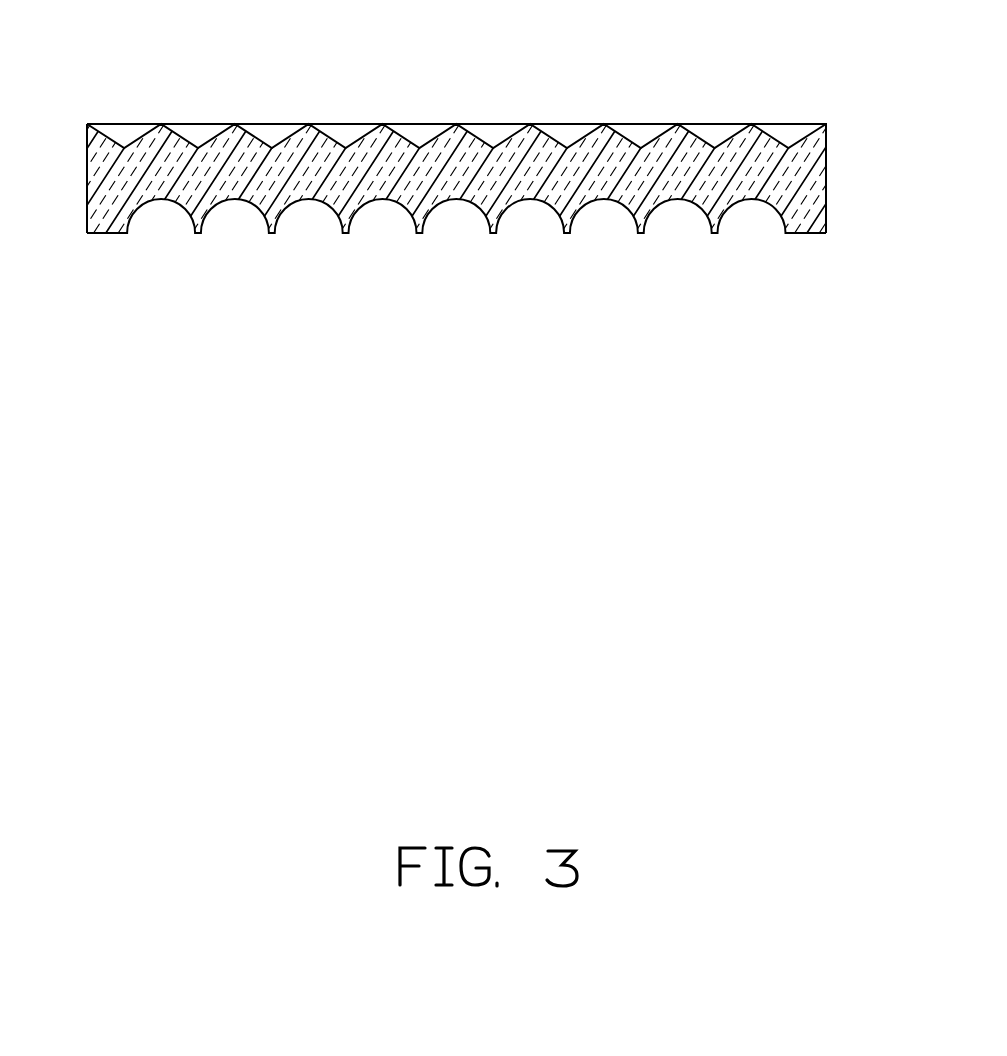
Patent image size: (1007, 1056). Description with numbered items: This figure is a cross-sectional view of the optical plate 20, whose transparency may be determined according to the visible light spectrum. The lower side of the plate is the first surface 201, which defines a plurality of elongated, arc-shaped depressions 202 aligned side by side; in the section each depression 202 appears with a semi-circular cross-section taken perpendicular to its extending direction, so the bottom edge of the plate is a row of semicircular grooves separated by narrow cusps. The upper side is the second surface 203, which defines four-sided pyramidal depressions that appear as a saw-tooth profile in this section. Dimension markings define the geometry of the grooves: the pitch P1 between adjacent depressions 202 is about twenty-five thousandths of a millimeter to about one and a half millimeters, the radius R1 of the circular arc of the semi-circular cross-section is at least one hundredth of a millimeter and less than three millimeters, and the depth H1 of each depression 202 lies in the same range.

The optical plate 20 is at (457, 179).
The first surface 201 is at (799, 237).
The elongated, arc-shaped depressions 202 is at (748, 218).
The second surface 203 is at (637, 122).
The radius R1 is at (584, 206).
The depth H1 is at (82, 234).
The pitch P1 is at (383, 280).